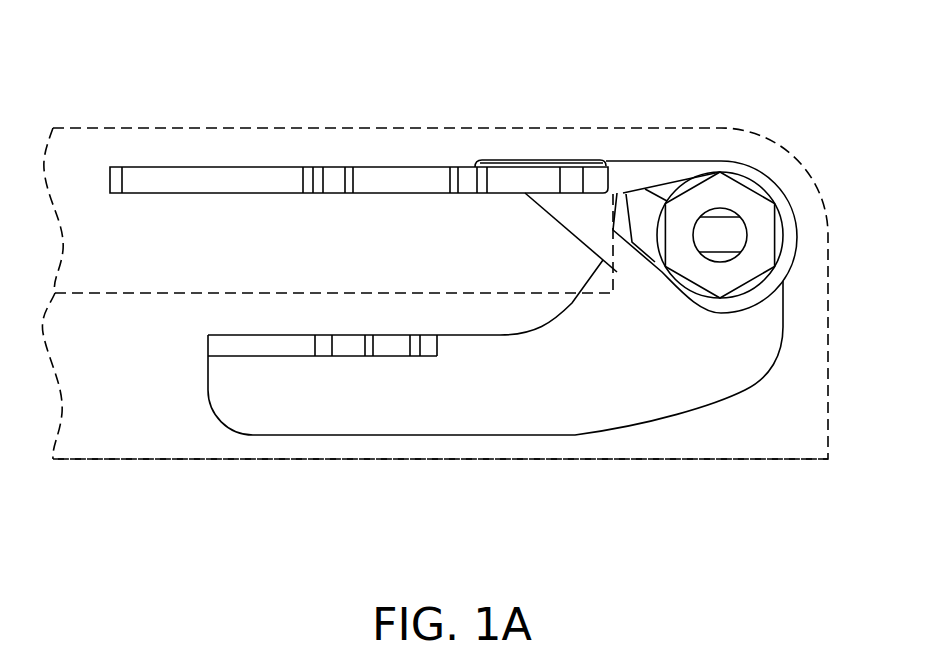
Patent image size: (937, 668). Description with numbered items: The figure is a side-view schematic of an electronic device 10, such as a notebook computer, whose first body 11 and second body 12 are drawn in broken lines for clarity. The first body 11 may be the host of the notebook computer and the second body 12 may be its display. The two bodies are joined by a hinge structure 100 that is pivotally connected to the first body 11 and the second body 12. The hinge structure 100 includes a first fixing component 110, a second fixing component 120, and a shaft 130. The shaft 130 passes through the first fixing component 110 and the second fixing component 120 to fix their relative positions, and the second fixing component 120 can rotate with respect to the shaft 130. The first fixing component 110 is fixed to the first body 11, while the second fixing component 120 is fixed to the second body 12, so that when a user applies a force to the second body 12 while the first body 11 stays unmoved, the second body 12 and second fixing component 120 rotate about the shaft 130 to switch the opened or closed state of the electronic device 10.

The electronic device 10 is at (851, 516).
The first body 11 is at (373, 462).
The second body 12 is at (373, 126).
The hinge structure 100 is at (460, 291).
The first fixing component 110 is at (275, 420).
The second fixing component 120 is at (237, 182).
The shaft 130 is at (735, 230).